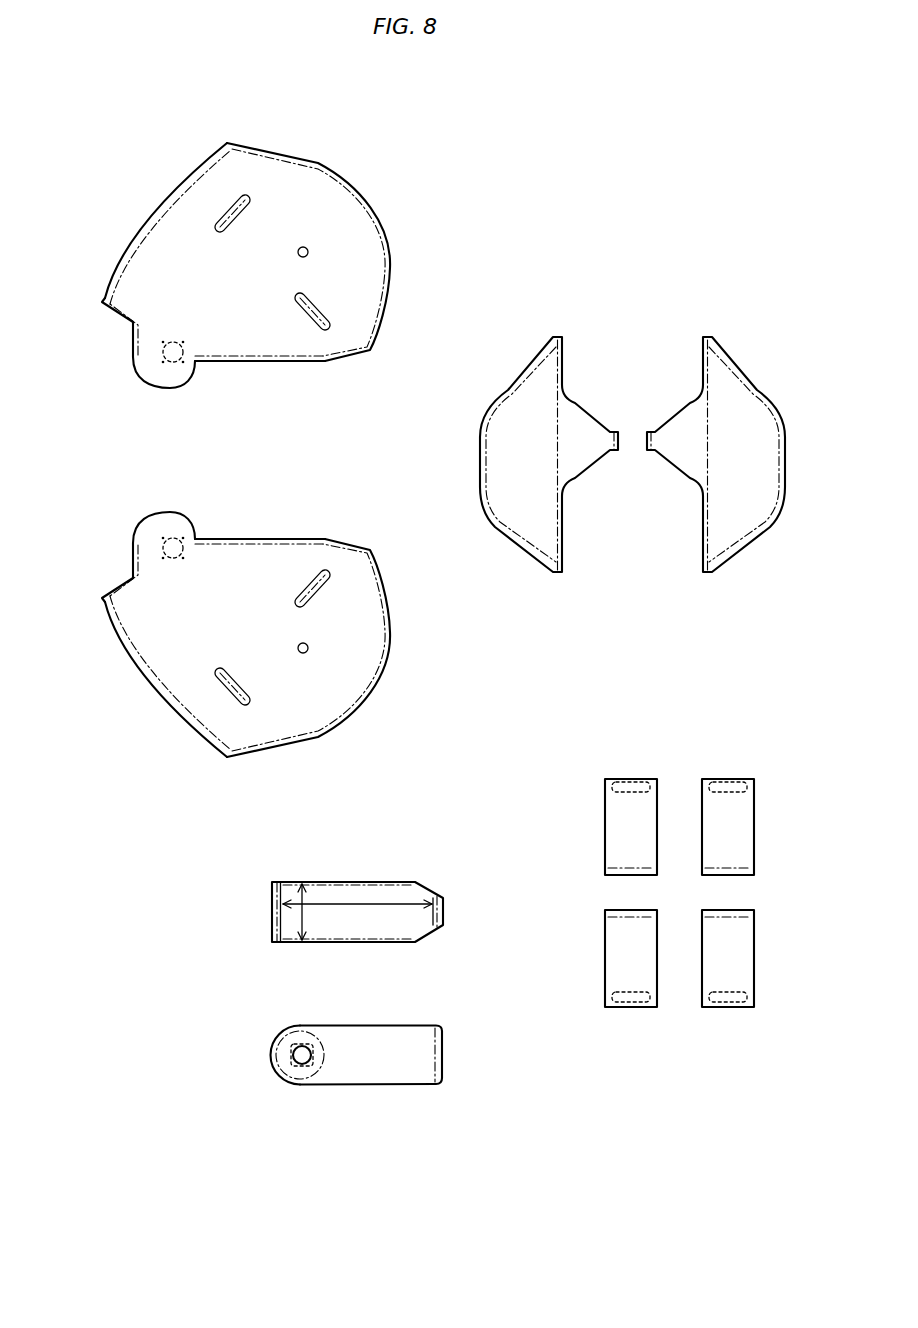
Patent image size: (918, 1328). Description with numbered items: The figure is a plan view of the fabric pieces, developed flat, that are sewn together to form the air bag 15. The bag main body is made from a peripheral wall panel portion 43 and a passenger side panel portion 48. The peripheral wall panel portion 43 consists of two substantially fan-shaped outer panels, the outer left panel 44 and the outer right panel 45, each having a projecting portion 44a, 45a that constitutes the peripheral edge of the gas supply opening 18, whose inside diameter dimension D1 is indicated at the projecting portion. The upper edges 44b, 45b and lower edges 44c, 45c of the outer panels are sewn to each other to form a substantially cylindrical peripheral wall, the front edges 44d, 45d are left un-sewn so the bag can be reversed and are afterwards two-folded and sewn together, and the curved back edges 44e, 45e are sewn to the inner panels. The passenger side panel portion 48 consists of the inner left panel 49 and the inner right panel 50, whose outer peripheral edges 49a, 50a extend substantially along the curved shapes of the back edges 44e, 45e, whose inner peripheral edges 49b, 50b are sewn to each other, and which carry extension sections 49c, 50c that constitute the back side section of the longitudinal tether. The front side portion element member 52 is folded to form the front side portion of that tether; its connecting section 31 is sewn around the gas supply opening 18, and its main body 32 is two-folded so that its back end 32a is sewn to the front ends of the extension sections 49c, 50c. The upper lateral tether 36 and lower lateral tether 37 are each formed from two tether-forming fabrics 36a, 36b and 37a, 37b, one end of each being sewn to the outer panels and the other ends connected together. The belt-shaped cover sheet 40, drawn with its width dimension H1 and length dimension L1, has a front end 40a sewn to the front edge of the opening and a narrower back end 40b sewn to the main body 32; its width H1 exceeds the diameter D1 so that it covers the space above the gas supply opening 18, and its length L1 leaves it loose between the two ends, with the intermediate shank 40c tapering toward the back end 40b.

The air bag 15 is at (747, 217).
The gas supply opening 18 is at (170, 547).
The connecting section 31 is at (292, 1070).
The main body 32 is at (397, 1073).
The back end 32a is at (443, 1063).
The upper lateral tether 36 is at (530, 683).
The tether-forming fabric 36a is at (624, 773).
The tether-forming fabric 36b is at (602, 910).
The lower lateral tether 37 is at (720, 683).
The tether-forming fabric 37a is at (734, 773).
The tether-forming fabric 37b is at (755, 910).
The cover sheet 40 is at (357, 873).
The front end 40a is at (273, 928).
The back end 40b is at (445, 912).
The pin shank 40c is at (357, 933).
The peripheral wall panel portion 43 is at (387, 412).
The outer left panel 44 is at (355, 537).
The projecting portion 44a is at (152, 537).
The upper edge 44b is at (142, 673).
The lower edge 44c is at (260, 538).
The front edge 44d is at (130, 562).
The back edge 44e is at (362, 693).
The outer right panel 45 is at (355, 365).
The projecting portion 45a is at (152, 365).
The upper edge 45b is at (143, 228).
The lower edge 45c is at (260, 362).
The front edge 45d is at (130, 338).
The back edge 45e is at (363, 207).
The passenger side panel portion 48 is at (588, 233).
The inner left panel 49 is at (687, 329).
The outer peripheral edge 49a is at (746, 376).
The inner peripheral edge 49b is at (700, 557).
The extension section 49c is at (680, 426).
The inner right panel 50 is at (578, 329).
The outer peripheral edge 50a is at (521, 376).
The inner peripheral edge 50b is at (565, 557).
The extension section 50c is at (589, 426).
The front side portion element member 52 is at (313, 1095).
The inside diameter dimension D1 is at (163, 558).
The width dimension H1 is at (303, 897).
The length dimension L1 is at (403, 902).